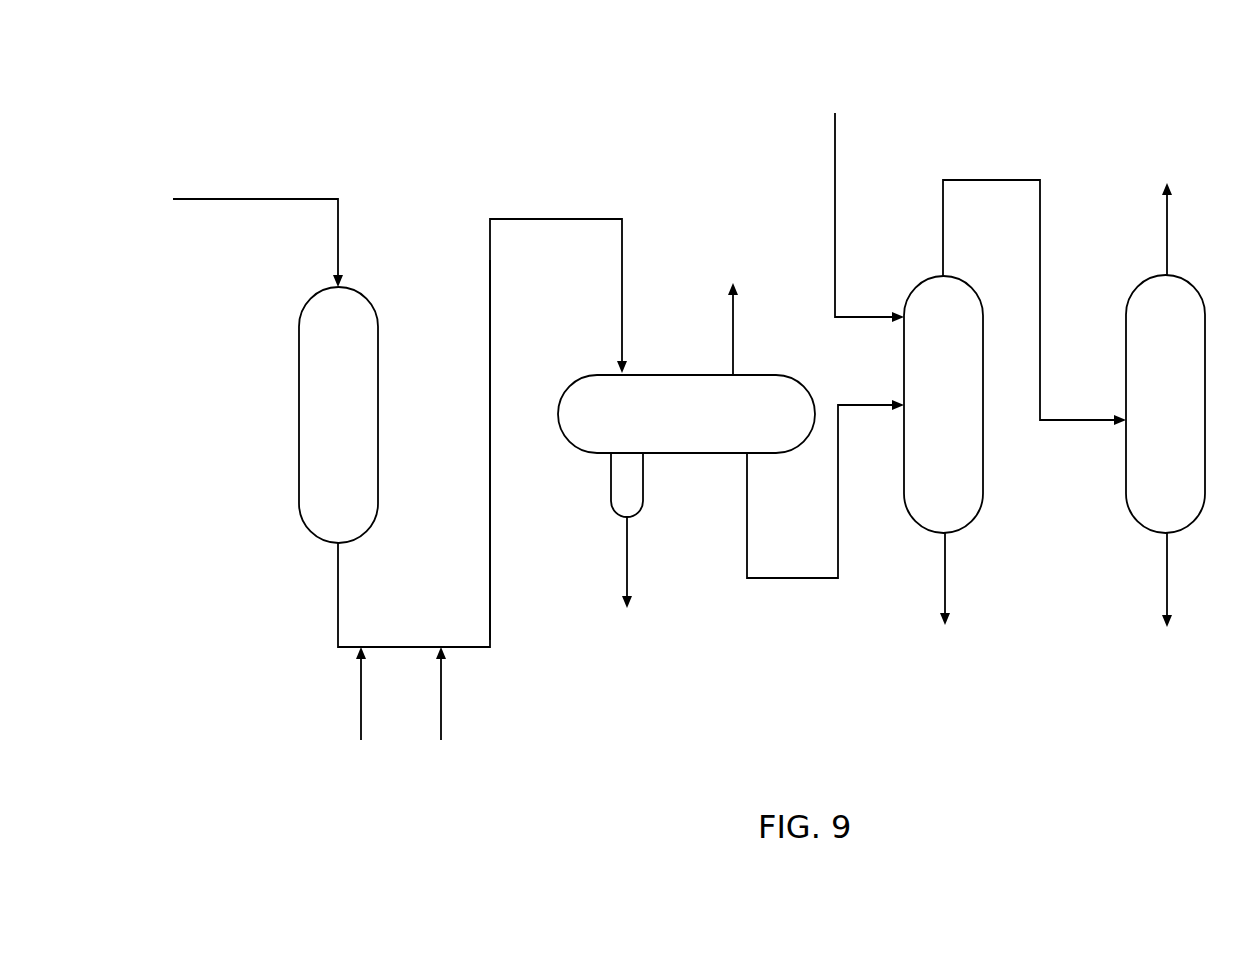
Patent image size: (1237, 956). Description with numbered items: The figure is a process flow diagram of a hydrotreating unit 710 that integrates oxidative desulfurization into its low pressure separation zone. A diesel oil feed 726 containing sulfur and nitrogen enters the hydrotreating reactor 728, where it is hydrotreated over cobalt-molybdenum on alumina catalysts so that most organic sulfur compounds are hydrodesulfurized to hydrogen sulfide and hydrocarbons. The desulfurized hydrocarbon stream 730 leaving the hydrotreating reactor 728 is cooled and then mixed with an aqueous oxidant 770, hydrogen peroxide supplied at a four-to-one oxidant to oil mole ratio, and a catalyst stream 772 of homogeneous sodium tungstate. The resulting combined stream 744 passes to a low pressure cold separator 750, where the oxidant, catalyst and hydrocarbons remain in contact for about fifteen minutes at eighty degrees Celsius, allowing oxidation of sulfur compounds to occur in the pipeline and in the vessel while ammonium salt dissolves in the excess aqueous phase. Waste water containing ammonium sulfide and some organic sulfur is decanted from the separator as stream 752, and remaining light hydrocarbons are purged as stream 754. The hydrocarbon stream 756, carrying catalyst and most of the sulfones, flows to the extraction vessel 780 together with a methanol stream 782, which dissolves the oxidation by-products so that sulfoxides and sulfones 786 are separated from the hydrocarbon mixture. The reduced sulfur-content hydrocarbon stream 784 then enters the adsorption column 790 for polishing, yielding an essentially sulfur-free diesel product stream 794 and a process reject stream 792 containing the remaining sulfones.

The process system 710 is at (336, 98).
The diesel oil feed 726 is at (244, 200).
The hydrotreating reactor 728 is at (357, 422).
The desulfurized hydrocarbon stream 730 is at (338, 605).
The combined stream 744 is at (490, 450).
The low pressure cold separator 750 is at (704, 423).
The waste water stream 752 is at (629, 562).
The light hydrocarbons purge stream 754 is at (737, 317).
The hydrocarbon stream 756 is at (839, 484).
The aqueous oxidant 770 is at (362, 692).
The catalyst stream 772 is at (441, 697).
The extraction vessel 780 is at (962, 412).
The methanol stream 782 is at (837, 197).
The reduced sulfur-content hydrocarbon stream 784 is at (945, 228).
The sulfoxides and sulfones stream 786 is at (946, 577).
The adsorption column 790 is at (1184, 412).
The process reject stream 792 is at (1168, 578).
The sulfur-free diesel product stream 794 is at (1168, 220).